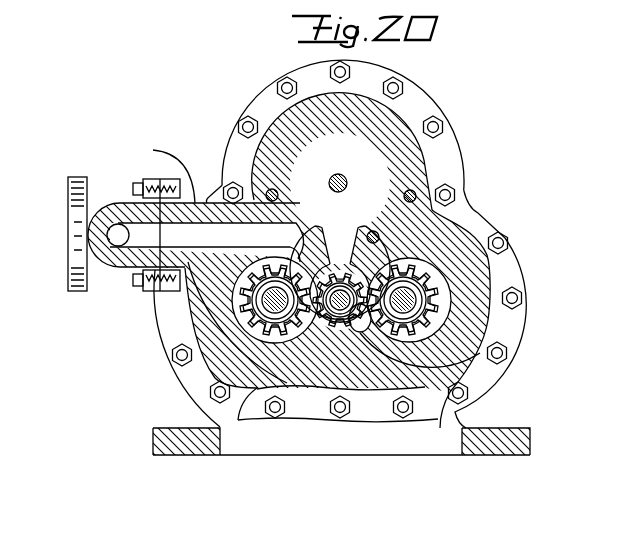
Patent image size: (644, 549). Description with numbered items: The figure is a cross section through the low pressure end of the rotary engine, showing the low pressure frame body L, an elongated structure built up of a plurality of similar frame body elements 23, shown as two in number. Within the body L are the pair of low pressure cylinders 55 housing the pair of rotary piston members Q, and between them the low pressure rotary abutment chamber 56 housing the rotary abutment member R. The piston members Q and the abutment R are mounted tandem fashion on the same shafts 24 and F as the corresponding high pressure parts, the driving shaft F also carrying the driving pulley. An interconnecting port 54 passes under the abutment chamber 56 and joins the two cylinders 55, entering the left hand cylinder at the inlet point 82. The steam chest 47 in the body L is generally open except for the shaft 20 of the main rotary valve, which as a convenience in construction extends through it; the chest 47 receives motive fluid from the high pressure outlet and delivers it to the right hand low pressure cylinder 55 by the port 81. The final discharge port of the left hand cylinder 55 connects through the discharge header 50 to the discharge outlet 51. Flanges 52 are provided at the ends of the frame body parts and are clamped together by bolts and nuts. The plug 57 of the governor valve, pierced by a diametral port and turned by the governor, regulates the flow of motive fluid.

The shaft 20 is at (338, 175).
The frame body elements 23 is at (257, 153).
The shaft 24 is at (277, 304).
The steam chest 47 is at (363, 160).
The discharge header 50 is at (172, 158).
The discharge outlet 51 is at (68, 238).
The flanges 52 is at (488, 372).
The interconnecting port 54 is at (336, 322).
The low pressure cylinders 55 is at (245, 318).
The low pressure rotary abutment chamber 56 is at (406, 345).
The plug 57 is at (379, 235).
The port 81 is at (367, 223).
The inlet point 82 is at (334, 306).
The driving shaft F is at (338, 306).
The low pressure frame body L is at (432, 158).
The rotary piston members Q is at (240, 308).
The rotary abutment member R is at (360, 332).